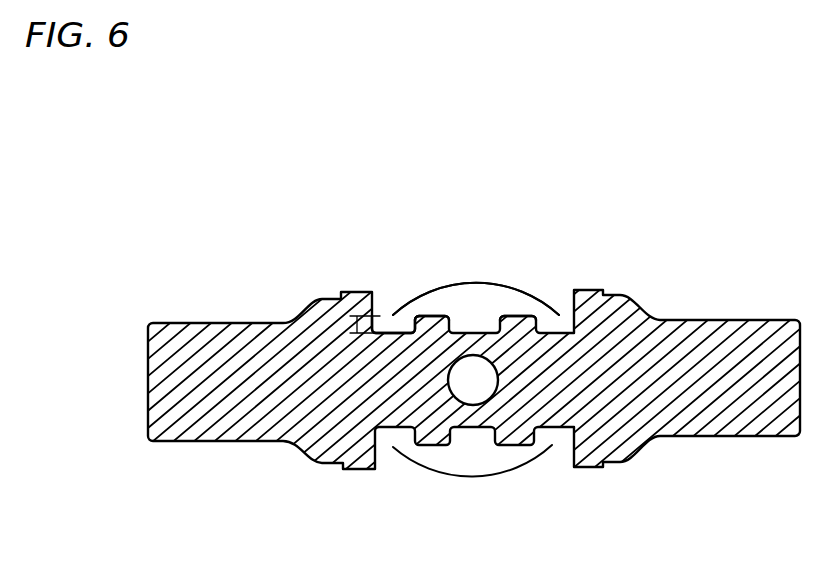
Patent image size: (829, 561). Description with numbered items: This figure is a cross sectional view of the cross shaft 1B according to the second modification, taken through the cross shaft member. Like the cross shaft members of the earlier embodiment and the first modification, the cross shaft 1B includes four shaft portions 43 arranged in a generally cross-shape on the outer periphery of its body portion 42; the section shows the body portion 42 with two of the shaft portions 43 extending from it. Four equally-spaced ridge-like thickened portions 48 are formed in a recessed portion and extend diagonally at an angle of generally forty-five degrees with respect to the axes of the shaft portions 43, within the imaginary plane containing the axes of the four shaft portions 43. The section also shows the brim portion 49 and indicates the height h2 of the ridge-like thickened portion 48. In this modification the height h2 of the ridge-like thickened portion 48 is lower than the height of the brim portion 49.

The body portion 42 is at (530, 360).
The shaft portion 43 is at (470, 282).
The ridge-like thickened portion 48 is at (423, 326).
The brim portion 49 is at (377, 326).
The height of the ridge-like thickened portion h2 is at (337, 318).
The cross shaft 1B is at (485, 343).